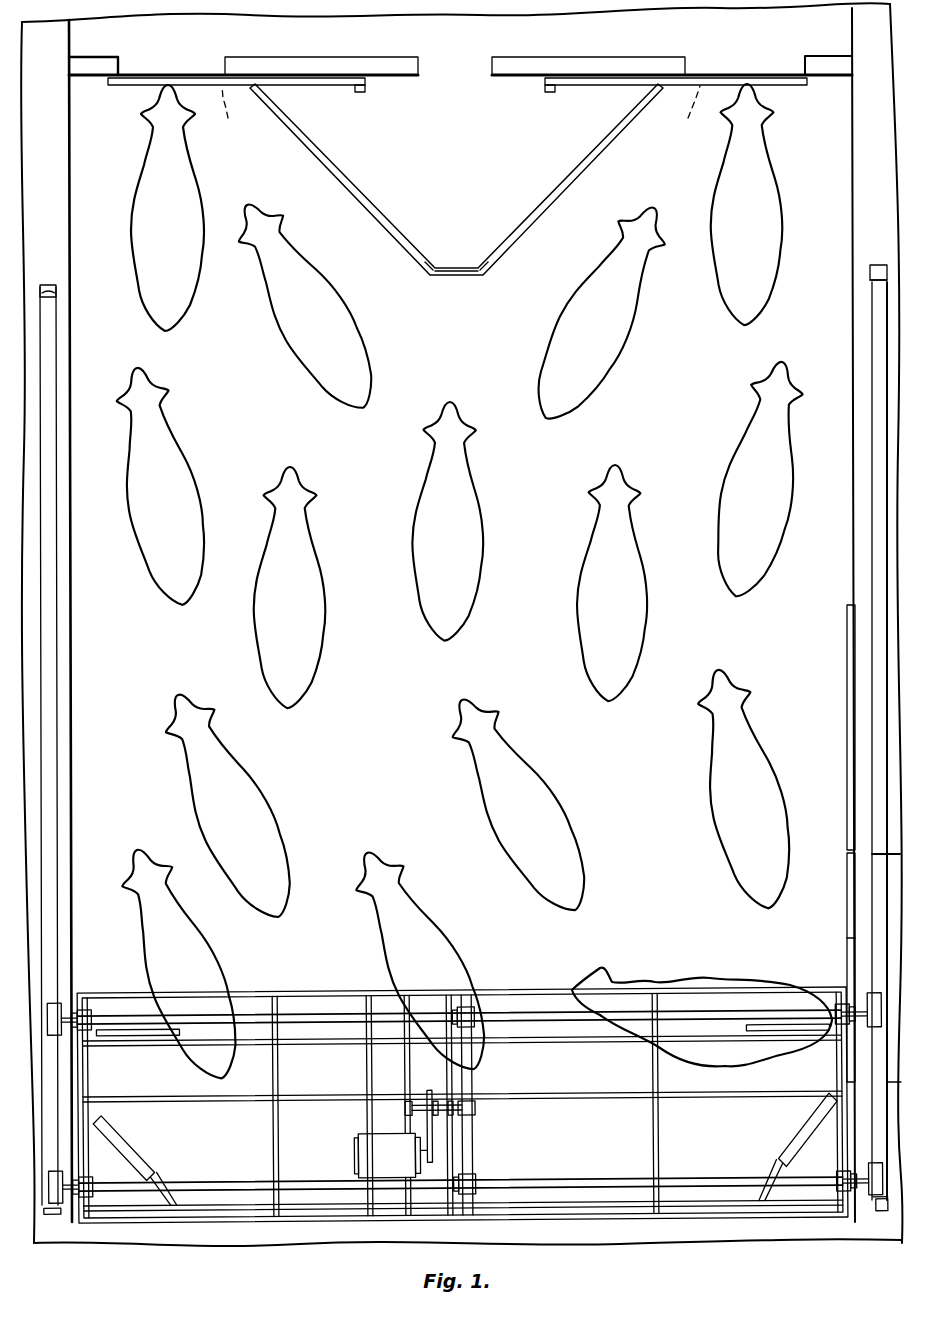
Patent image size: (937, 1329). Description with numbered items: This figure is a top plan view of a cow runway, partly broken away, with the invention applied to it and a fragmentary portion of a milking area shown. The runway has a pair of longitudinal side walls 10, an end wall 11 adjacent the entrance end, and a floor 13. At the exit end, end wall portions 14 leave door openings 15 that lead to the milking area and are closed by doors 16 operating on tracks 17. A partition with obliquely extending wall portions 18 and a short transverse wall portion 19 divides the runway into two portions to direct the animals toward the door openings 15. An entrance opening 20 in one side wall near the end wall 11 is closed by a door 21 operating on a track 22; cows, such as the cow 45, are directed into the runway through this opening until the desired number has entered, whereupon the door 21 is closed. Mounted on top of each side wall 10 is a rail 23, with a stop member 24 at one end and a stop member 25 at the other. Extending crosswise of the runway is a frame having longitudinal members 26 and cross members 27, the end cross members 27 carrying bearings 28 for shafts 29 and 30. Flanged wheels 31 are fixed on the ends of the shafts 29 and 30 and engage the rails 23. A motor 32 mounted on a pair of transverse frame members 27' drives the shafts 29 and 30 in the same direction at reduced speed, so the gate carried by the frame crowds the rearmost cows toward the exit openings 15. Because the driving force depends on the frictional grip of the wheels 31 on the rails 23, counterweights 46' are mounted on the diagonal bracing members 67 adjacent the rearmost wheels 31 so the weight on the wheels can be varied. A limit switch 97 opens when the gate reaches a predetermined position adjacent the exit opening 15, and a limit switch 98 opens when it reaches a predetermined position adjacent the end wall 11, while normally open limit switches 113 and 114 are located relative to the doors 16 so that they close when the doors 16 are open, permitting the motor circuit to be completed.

The longitudinal side walls 10 is at (70, 646).
The end wall 11 is at (330, 1240).
The floor 13 is at (354, 243).
The end wall portions 14 is at (104, 62).
The door openings 15 is at (203, 62).
The doors 16 is at (457, 111).
The tracks 17 is at (305, 85).
The obliquely extending wall portions 18 is at (420, 254).
The short transverse wall portion 19 is at (458, 276).
The entrance opening 20 is at (862, 884).
The door 21 is at (852, 938).
The track 22 is at (849, 766).
The rail 23 is at (50, 478).
The stop member 24 is at (48, 1212).
The stop member 25 is at (56, 295).
The longitudinal members 26 is at (292, 994).
The cross members 27 is at (464, 1105).
The transverse frame members 27' is at (369, 1105).
The bearings 28 is at (88, 1028).
The shaft 29 is at (560, 1180).
The shaft 30 is at (530, 1012).
The flanged wheels 31 is at (56, 1002).
The motor 32 is at (372, 1150).
The cow 45 is at (458, 950).
The counterweights 46' is at (465, 1137).
The diagonal bracing members 67 is at (166, 1200).
The limit switch 97 is at (877, 265).
The limit switch 98 is at (876, 1215).
The limit switch 113 is at (548, 92).
The limit switch 114 is at (358, 92).